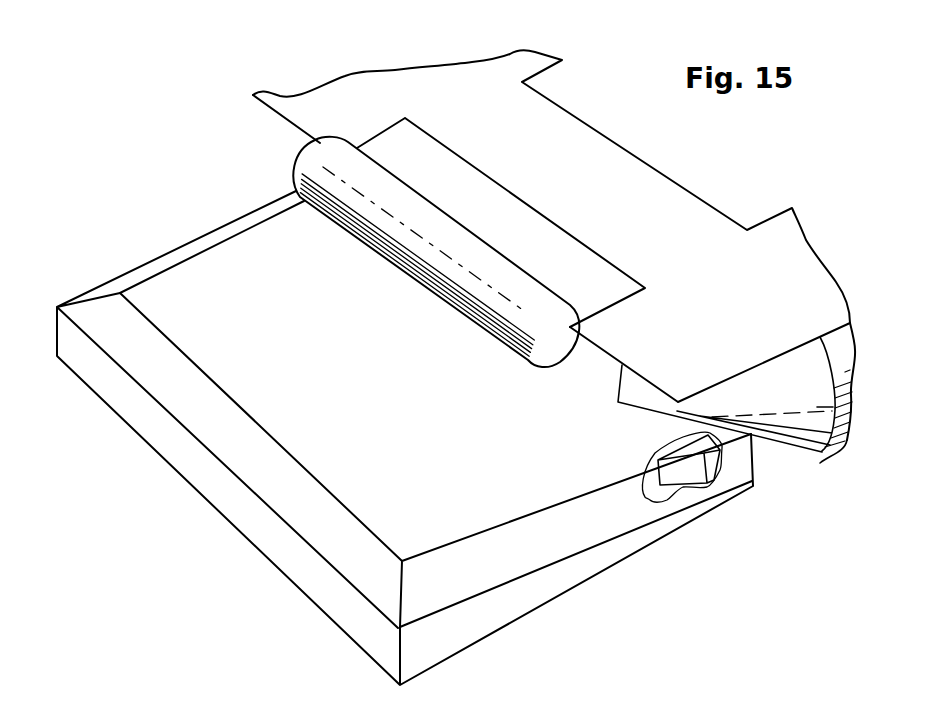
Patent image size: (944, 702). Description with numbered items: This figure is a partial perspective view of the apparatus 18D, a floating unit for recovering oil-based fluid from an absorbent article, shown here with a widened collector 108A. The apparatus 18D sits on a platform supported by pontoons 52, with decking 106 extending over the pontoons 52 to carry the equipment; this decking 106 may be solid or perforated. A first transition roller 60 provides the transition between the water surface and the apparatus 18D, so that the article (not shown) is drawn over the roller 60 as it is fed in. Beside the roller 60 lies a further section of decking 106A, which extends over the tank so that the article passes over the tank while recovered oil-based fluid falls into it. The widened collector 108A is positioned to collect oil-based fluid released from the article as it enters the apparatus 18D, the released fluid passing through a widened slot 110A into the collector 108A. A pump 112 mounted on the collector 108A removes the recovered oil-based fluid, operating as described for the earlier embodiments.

The apparatus 18D is at (293, 91).
The pontoons 52 is at (820, 463).
The first transition roller 60 is at (403, 221).
The decking 106 is at (698, 341).
The decking 106A is at (573, 178).
The widened collector 108A is at (210, 228).
The widened slot 110A is at (408, 384).
The pump 112 is at (682, 467).